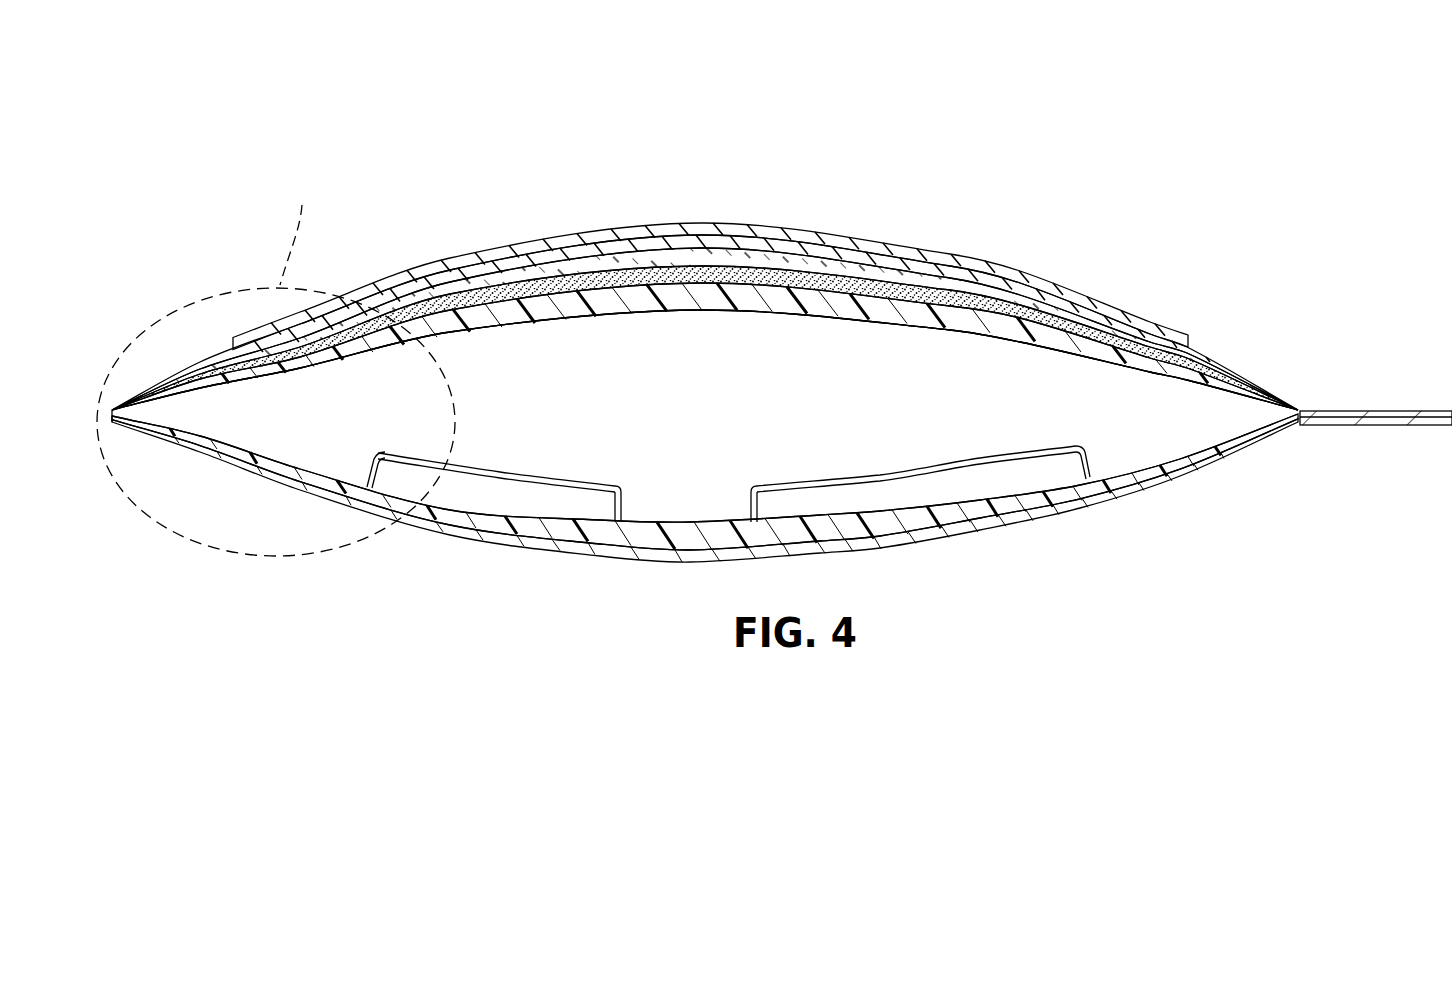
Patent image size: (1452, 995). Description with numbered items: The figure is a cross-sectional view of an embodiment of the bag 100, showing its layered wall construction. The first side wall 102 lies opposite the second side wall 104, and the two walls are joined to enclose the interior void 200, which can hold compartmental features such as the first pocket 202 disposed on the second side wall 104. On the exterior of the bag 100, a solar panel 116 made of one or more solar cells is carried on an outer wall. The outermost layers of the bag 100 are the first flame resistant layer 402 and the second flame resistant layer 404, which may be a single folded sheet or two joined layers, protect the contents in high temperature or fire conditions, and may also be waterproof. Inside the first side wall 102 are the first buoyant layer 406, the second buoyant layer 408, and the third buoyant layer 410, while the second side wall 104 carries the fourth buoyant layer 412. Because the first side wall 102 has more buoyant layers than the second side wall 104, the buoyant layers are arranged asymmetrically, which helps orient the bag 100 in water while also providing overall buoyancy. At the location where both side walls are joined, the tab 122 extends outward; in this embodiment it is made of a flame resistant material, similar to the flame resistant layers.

The bag 100 is at (586, 116).
The first side wall 102 is at (810, 197).
The second side wall 104 is at (593, 582).
The solar panel 116 is at (568, 238).
The tab 122 is at (1361, 410).
The interior void 200 is at (730, 405).
The first pocket 202 is at (518, 478).
The first flame resistant layer 402 is at (935, 262).
The second flame resistant layer 404 is at (960, 542).
The first buoyant layer 406 is at (808, 306).
The second buoyant layer 408 is at (838, 296).
The third buoyant layer 410 is at (915, 281).
The fourth buoyant layer 412 is at (683, 528).